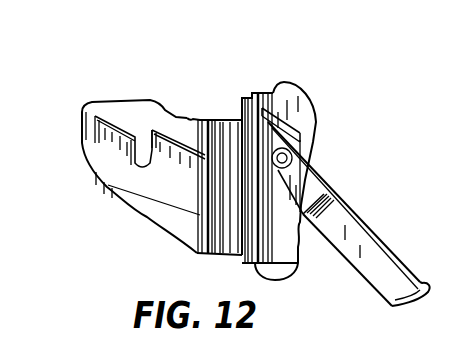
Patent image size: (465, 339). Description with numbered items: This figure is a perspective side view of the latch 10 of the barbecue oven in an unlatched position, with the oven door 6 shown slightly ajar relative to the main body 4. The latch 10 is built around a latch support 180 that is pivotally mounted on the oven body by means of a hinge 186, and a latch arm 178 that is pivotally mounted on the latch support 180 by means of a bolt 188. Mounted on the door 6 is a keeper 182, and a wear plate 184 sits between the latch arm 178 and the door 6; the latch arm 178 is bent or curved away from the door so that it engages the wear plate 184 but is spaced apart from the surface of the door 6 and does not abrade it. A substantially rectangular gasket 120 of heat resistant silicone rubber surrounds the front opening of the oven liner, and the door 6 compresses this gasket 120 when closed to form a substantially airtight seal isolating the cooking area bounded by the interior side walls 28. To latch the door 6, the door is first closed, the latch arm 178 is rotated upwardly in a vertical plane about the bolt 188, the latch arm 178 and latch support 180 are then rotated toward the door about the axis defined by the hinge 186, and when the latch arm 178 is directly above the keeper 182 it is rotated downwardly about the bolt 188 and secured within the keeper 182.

The latch 10 is at (153, 84).
The oven door 6 is at (180, 122).
The interior side walls 28 is at (240, 122).
The hinge 186 is at (280, 114).
The latch support 180 is at (290, 123).
The bolt 188 is at (296, 160).
The latch arm 178 is at (365, 234).
The main body 4 is at (298, 232).
The gasket 120 is at (257, 265).
The wear plate 184 is at (173, 182).
The keeper 182 is at (118, 150).